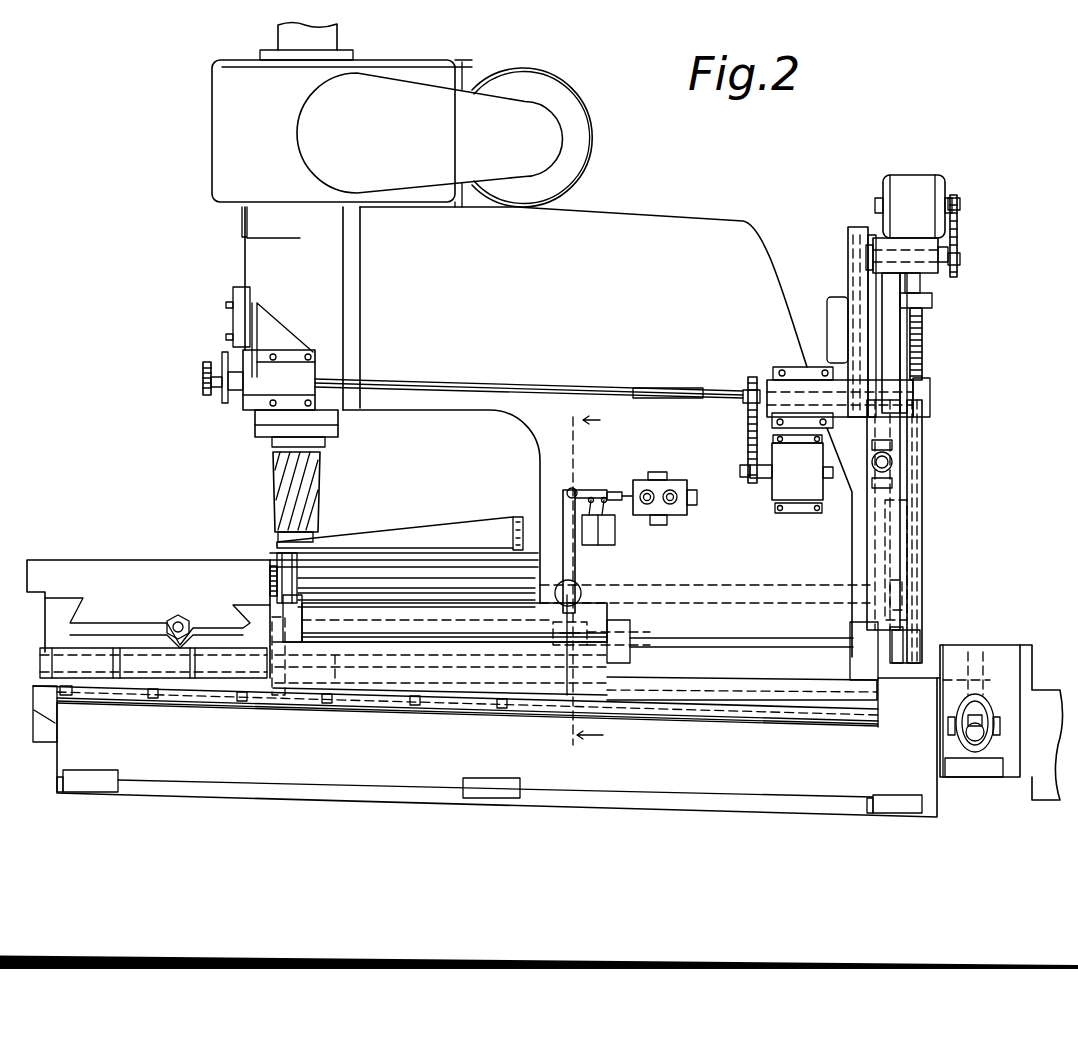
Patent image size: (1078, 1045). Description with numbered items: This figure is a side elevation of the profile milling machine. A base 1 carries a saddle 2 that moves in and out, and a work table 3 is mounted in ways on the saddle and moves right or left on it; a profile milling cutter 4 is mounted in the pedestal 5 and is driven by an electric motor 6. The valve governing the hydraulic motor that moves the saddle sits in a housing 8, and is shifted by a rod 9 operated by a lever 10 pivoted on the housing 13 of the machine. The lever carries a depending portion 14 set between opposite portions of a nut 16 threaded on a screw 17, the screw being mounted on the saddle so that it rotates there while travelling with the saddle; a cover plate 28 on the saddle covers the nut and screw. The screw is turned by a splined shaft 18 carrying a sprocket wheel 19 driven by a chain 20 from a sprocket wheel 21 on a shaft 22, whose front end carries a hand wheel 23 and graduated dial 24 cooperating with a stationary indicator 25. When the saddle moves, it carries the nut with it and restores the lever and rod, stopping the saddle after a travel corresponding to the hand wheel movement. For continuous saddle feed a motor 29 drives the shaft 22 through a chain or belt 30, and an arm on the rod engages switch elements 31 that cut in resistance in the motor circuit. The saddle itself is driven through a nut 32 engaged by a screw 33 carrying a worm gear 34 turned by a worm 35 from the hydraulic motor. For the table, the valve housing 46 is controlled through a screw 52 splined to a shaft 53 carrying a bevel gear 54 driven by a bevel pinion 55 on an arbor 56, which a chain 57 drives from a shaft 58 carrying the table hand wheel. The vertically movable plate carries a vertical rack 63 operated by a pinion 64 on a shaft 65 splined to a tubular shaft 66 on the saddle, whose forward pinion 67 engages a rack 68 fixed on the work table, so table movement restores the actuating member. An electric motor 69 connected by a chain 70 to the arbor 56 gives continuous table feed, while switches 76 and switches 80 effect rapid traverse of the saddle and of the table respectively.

The base 1 is at (348, 764).
The saddle 2 is at (250, 620).
The work table 3 is at (127, 568).
The profile milling cutter 4 is at (283, 478).
The pedestal 5 is at (353, 283).
The electric motor 6 is at (572, 162).
The housing 8 is at (685, 513).
The rod 9 is at (588, 488).
The lever 10 is at (575, 575).
The housing 13 is at (695, 564).
The depending portion 14 is at (615, 612).
The nut 16 is at (552, 628).
The screw 17 is at (363, 627).
The shaft 18 is at (730, 642).
The sprocket wheel 19 is at (913, 633).
The chain 20 is at (917, 472).
The sprocket wheel 21 is at (930, 395).
The shaft 22 is at (603, 388).
The hand wheel 23 is at (203, 378).
The graduated dial 24 is at (222, 405).
The stationary indicator 25 is at (226, 347).
The cover plate 28 is at (426, 616).
The motor 29 is at (798, 490).
The chain or belt 30 is at (750, 432).
The switch elements 31 is at (565, 505).
The nut 32 is at (333, 660).
The screw 33 is at (777, 692).
The worm gear 34 is at (983, 660).
The worm 35 is at (960, 737).
The housing 46 is at (892, 457).
The screw 52 is at (922, 348).
The shaft 53 is at (927, 290).
The bevel gear 54 is at (930, 262).
The bevel pinion 55 is at (925, 242).
The arbor 56 is at (882, 238).
The chain 57 is at (853, 273).
The shaft 58 is at (688, 391).
The vertical rack 63 is at (873, 563).
The pinion 64 is at (863, 595).
The shaft 65 is at (730, 593).
The tubular shaft 66 is at (478, 595).
The pinion 67 is at (270, 582).
The rack 68 is at (277, 563).
The electric motor 69 is at (920, 183).
The chain 70 is at (960, 226).
The switches 76 is at (226, 305).
The switches 80 is at (226, 337).